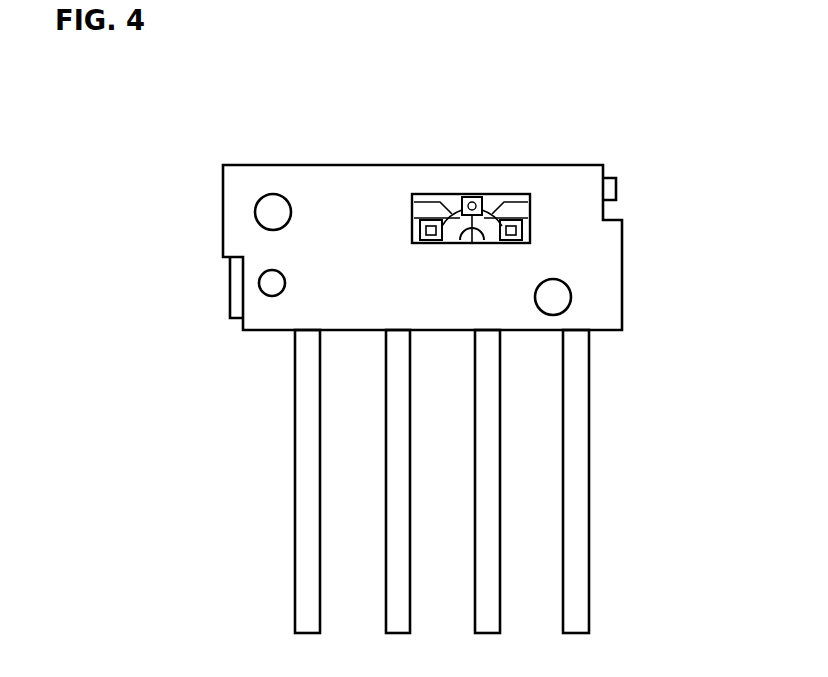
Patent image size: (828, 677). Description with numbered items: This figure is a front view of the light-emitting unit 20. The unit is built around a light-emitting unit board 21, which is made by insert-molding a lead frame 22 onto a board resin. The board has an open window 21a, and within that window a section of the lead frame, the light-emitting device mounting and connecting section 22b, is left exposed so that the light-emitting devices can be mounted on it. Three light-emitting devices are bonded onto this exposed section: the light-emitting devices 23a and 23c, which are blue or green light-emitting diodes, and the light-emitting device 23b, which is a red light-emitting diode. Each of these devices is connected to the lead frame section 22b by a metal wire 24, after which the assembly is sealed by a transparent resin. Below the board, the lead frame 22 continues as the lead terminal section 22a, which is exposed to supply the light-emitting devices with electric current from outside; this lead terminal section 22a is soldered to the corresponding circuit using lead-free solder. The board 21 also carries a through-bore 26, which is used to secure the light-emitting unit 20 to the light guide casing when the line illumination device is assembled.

The light-emitting unit 20 is at (616, 133).
The light-emitting unit board 21 is at (325, 172).
The open window 21a is at (428, 194).
The lead frame 22 is at (296, 408).
The lead terminal section 22a is at (400, 510).
The light-emitting device mounting and connecting section 22b is at (498, 194).
The light-emitting device 23a is at (420, 214).
The light-emitting device 23b is at (473, 194).
The light-emitting device 23c is at (527, 195).
The metal wire 24 is at (420, 227).
The through-bore 26 is at (273, 213).